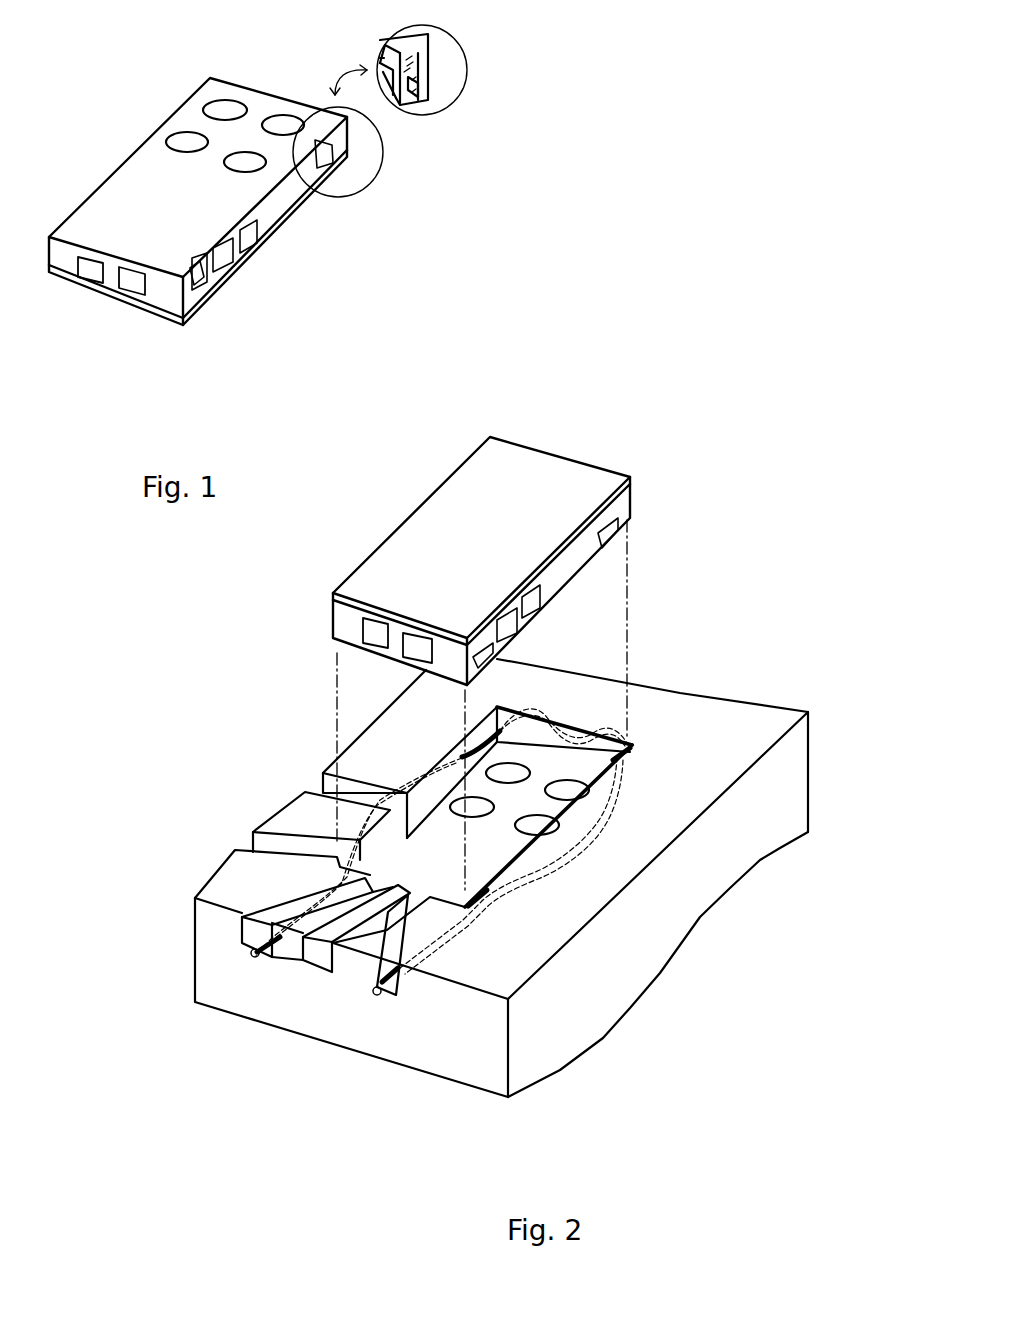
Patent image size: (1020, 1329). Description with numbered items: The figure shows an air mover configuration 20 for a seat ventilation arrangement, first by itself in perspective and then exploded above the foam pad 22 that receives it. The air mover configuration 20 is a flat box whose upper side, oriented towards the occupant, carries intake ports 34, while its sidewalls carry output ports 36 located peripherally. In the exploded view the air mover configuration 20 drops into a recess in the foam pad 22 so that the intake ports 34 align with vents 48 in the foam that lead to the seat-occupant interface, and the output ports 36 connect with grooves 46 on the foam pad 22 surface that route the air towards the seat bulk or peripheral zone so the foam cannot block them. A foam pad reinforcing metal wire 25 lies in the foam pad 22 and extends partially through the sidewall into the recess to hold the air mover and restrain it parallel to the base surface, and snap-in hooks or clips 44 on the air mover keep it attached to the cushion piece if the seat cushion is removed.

In FIG. 1, the air mover configuration 20 is at (345, 246).
In FIG. 2, the air mover configuration 20 is at (613, 452).
In FIG. 2, the foam pad 22 is at (715, 712).
In FIG. 2, the foam pad reinforcing metal wire 25 is at (585, 845).
In FIG. 1, the intake ports 34 is at (227, 107).
In FIG. 1, the output ports 36 is at (135, 285).
In FIG. 2, the output ports 36 is at (365, 633).
In FIG. 1, the clips 44 is at (412, 67).
In FIG. 2, the grooves 46 is at (308, 943).
In FIG. 2, the vents 48 is at (507, 773).